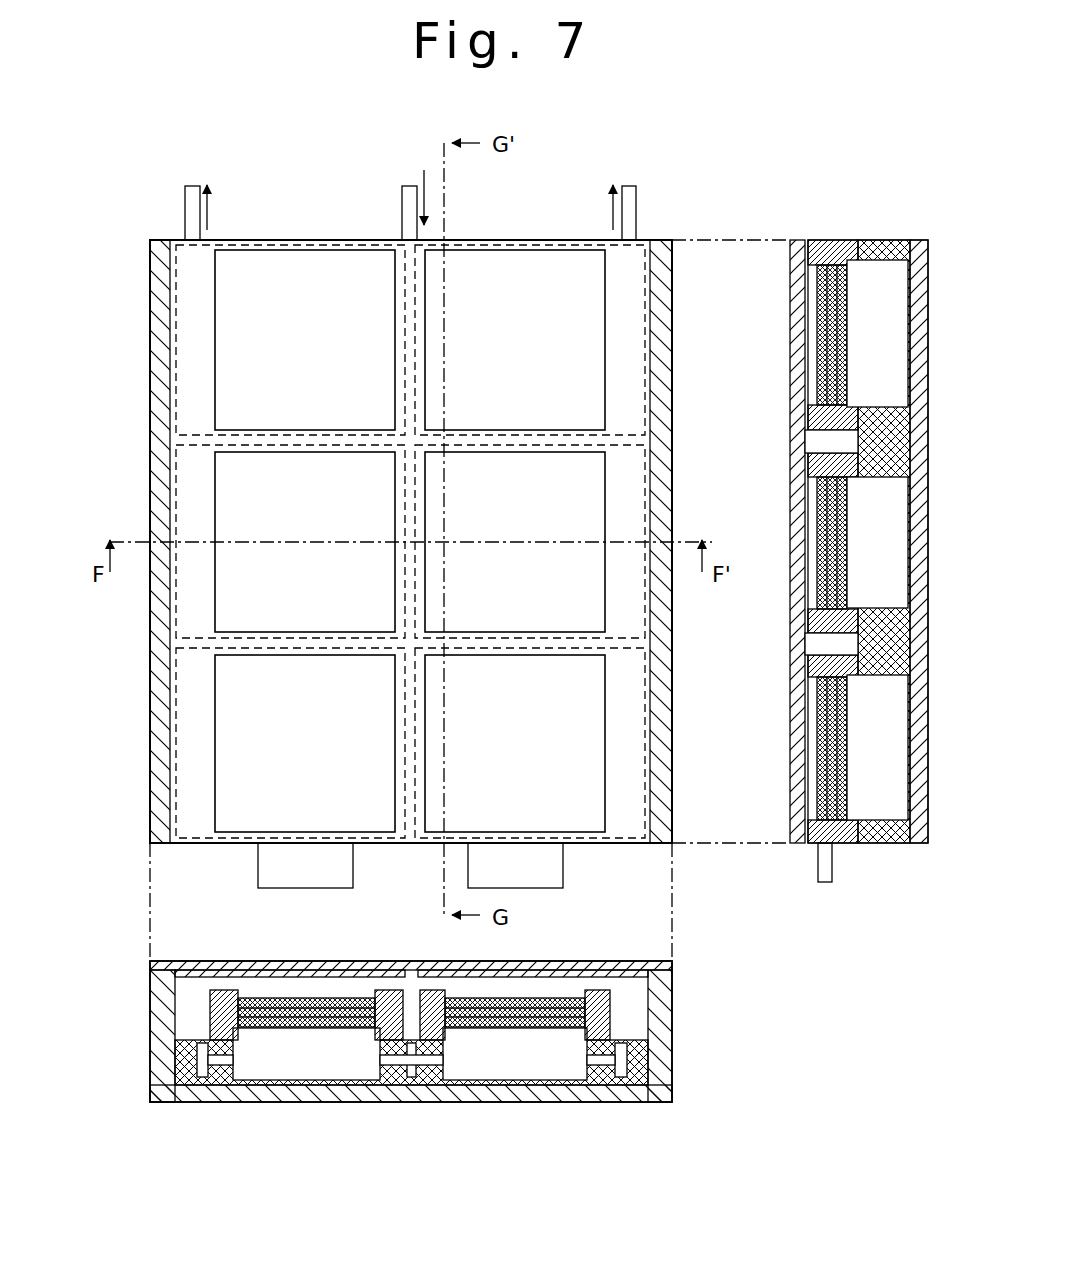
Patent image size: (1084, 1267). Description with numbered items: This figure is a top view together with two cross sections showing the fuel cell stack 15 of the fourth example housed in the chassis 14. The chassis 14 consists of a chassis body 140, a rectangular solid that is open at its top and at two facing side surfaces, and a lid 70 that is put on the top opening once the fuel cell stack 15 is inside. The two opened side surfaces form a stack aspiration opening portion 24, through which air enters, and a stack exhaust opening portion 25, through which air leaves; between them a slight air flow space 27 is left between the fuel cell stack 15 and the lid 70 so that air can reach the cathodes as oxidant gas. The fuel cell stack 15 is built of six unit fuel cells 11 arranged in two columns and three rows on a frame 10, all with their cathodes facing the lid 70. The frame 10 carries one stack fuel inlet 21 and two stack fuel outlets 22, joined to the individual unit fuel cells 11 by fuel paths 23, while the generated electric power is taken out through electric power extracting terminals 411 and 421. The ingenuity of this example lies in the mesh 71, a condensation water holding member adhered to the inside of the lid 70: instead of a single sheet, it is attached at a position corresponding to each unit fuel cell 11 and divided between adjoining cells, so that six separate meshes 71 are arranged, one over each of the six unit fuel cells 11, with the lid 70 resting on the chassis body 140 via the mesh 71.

The frame 10 is at (180, 1068).
The unit fuel cell 11 is at (232, 368).
The chassis 14 is at (757, 966).
The fuel cell stack 15 is at (501, 567).
The stack fuel inlet 21 is at (412, 200).
The stack fuel outlet 22 is at (190, 216).
The fuel path 23 is at (400, 1075).
The stack aspiration opening portion 24 is at (612, 845).
The stack exhaust opening portion 25 is at (462, 240).
The air flow space 27 is at (540, 985).
The lid 70 is at (797, 265).
The mesh 71 is at (312, 240).
The chassis body 140 is at (157, 418).
The electric power extracting terminal 411 is at (548, 873).
The electric power extracting terminal 421 is at (270, 873).